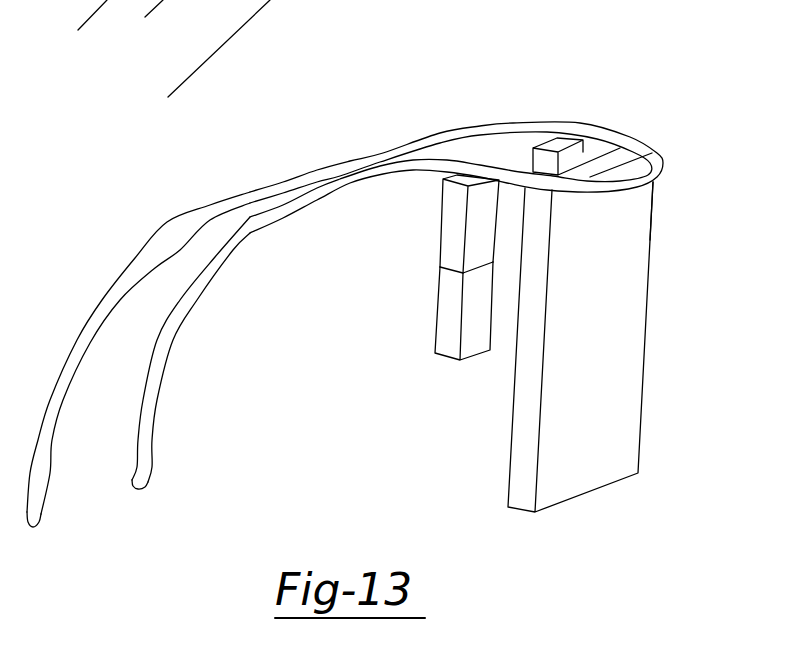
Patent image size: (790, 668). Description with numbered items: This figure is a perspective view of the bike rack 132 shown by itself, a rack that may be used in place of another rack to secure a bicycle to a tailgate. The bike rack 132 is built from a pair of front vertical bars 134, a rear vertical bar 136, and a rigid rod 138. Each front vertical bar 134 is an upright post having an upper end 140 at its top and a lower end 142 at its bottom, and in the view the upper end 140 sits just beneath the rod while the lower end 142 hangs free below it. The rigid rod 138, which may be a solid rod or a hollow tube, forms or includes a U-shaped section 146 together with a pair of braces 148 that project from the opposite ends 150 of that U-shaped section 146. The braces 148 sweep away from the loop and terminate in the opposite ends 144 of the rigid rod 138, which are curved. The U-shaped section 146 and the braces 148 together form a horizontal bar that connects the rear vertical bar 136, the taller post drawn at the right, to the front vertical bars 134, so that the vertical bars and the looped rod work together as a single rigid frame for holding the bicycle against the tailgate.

The bike rack 132 is at (658, 69).
The front vertical bar 134 is at (543, 157).
The rear vertical bar 136 is at (607, 380).
The rigid rod 138 is at (660, 144).
The upper end 140 is at (453, 200).
The lower end 142 is at (450, 342).
The opposite ends 144 is at (42, 517).
The U-shaped section 146 is at (638, 182).
The braces 148 is at (385, 155).
The opposite ends of the U-shaped section 150 is at (418, 163).